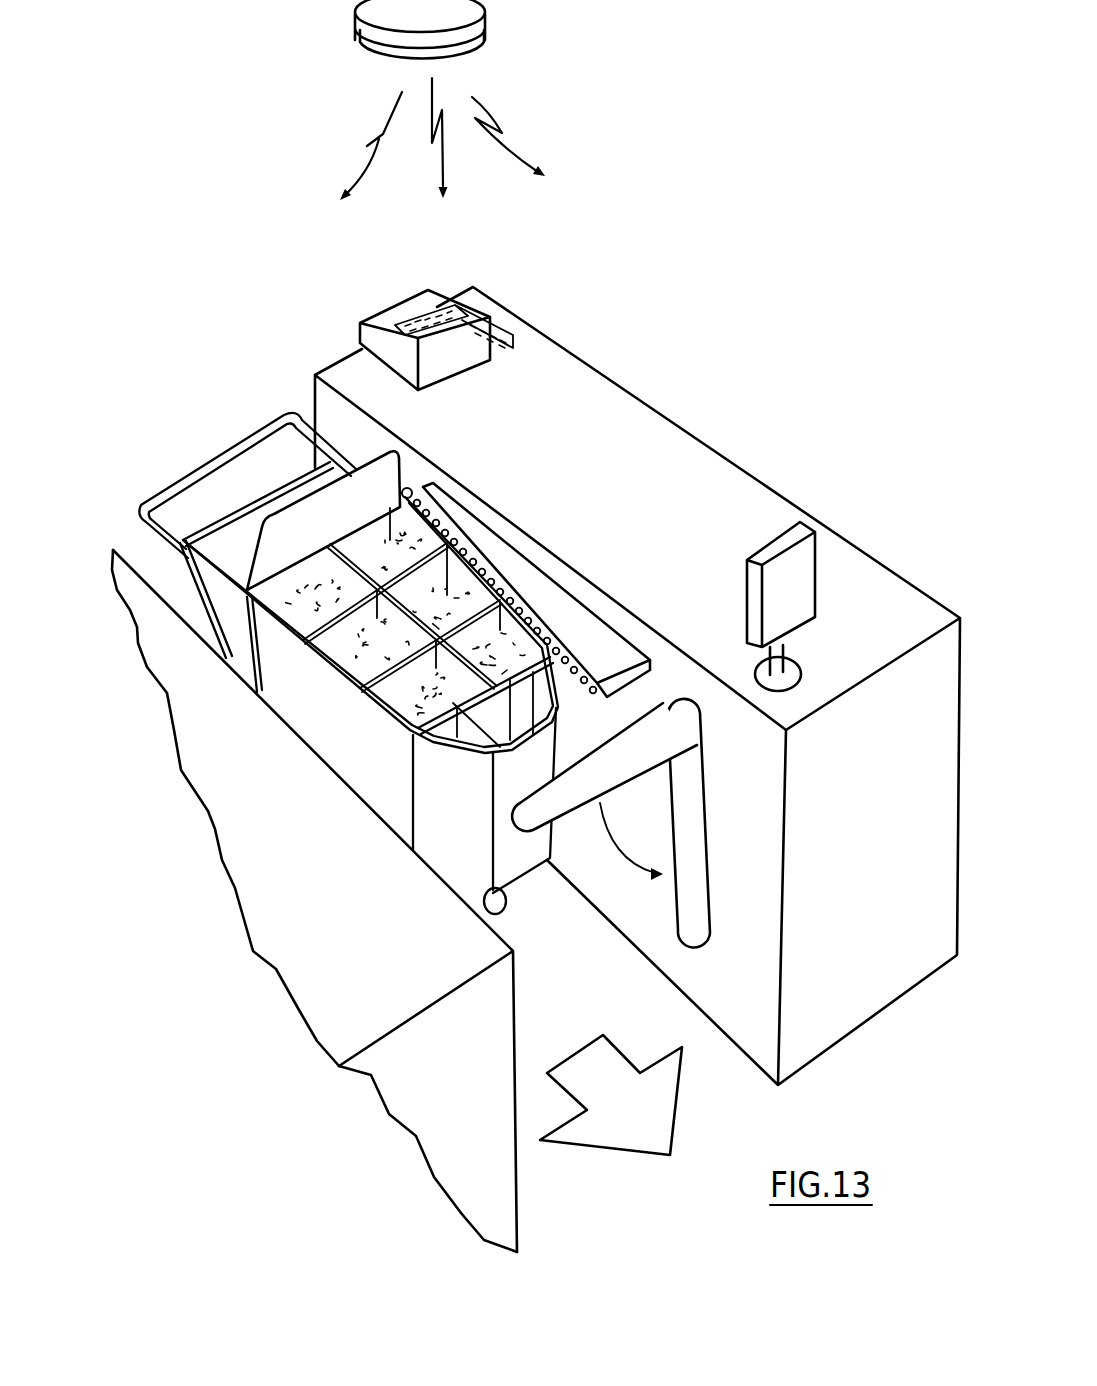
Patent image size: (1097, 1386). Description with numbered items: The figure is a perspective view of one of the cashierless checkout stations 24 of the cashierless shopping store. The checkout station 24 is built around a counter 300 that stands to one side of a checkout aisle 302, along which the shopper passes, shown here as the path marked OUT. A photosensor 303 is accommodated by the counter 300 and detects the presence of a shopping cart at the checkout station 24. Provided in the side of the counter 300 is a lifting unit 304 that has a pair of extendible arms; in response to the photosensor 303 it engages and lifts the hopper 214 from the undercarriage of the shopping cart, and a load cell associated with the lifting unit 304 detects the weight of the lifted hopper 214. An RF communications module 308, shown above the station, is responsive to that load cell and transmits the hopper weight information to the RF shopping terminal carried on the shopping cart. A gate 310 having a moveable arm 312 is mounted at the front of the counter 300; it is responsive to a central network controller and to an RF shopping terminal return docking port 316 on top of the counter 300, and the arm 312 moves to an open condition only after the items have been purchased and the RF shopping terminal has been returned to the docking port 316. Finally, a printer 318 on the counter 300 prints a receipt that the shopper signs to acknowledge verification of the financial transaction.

The cashierless checkout station 24 is at (549, 694).
The hopper 214 is at (321, 718).
The counter 300 is at (695, 468).
The checkout aisle 302 is at (653, 1025).
The photosensor 303 is at (409, 487).
The lifting unit 304 is at (597, 637).
The RF communications module 308 is at (478, 16).
The gate 310 is at (557, 897).
The moveable arm 312 is at (571, 800).
The RF shopping terminal return docking port 316 is at (782, 645).
The printer 318 is at (463, 357).